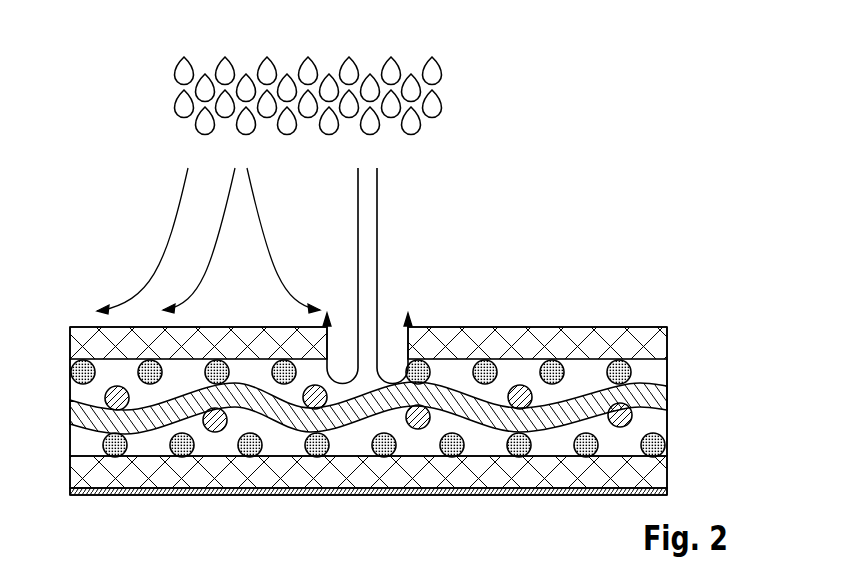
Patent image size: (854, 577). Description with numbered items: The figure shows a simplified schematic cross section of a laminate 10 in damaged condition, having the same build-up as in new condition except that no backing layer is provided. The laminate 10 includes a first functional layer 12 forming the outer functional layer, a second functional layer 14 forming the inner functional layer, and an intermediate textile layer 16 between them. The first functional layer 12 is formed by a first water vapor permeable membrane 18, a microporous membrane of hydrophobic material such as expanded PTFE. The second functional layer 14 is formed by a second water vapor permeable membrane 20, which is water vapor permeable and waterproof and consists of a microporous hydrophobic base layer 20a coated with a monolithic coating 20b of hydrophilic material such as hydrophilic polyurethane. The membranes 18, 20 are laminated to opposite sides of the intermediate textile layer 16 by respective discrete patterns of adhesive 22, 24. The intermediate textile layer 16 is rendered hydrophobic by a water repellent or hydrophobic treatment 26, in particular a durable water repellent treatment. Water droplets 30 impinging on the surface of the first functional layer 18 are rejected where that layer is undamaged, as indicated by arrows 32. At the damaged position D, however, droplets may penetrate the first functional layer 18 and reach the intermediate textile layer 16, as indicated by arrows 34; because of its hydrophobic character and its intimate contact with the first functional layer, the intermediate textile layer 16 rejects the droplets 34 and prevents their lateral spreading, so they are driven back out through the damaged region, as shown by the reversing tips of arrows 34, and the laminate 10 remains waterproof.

The laminate 10 is at (679, 298).
The first functional layer 12 is at (655, 341).
The second functional layer 14 is at (655, 471).
The intermediate textile layer 16 is at (652, 384).
The first water vapor permeable membrane 18 is at (585, 327).
The second water vapor permeable membrane 20 is at (85, 496).
The base layer 20a is at (85, 447).
The monolithic coating 20b is at (650, 491).
The discrete pattern of adhesive 22 is at (620, 359).
The discrete pattern of adhesive 24 is at (660, 445).
The water repellent or hydrophobic treatment 26 is at (660, 417).
The water droplets 30 is at (450, 60).
The arrows 32 is at (177, 212).
The arrows 34 is at (379, 194).
The damaged region D is at (391, 309).